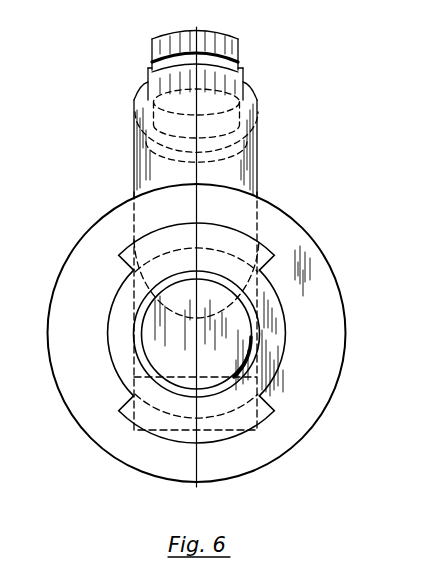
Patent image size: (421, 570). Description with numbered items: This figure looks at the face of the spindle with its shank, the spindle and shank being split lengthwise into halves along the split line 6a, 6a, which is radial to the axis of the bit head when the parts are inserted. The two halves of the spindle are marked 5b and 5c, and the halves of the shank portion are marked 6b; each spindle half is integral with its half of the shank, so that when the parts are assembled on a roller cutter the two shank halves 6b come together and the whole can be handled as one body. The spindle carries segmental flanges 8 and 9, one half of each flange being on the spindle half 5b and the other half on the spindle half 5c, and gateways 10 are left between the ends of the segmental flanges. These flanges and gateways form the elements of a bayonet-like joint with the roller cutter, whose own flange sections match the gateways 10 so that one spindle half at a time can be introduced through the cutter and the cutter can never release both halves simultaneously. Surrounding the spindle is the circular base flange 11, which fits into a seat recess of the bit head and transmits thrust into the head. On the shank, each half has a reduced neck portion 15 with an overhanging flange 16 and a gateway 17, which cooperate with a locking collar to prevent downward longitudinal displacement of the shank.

The split line 6a is at (194, 257).
The shank half 6b is at (134, 166).
The overhanging flange 16 is at (208, 32).
The gateway 17 is at (240, 64).
The reduced neck portion 15 is at (211, 80).
The segmental flange 9 is at (128, 248).
The segmental flange 8 is at (123, 416).
The base flange 11 is at (103, 277).
The spindle half 5c is at (112, 305).
The spindle half 5b is at (282, 307).
The gateway 10 is at (103, 342).